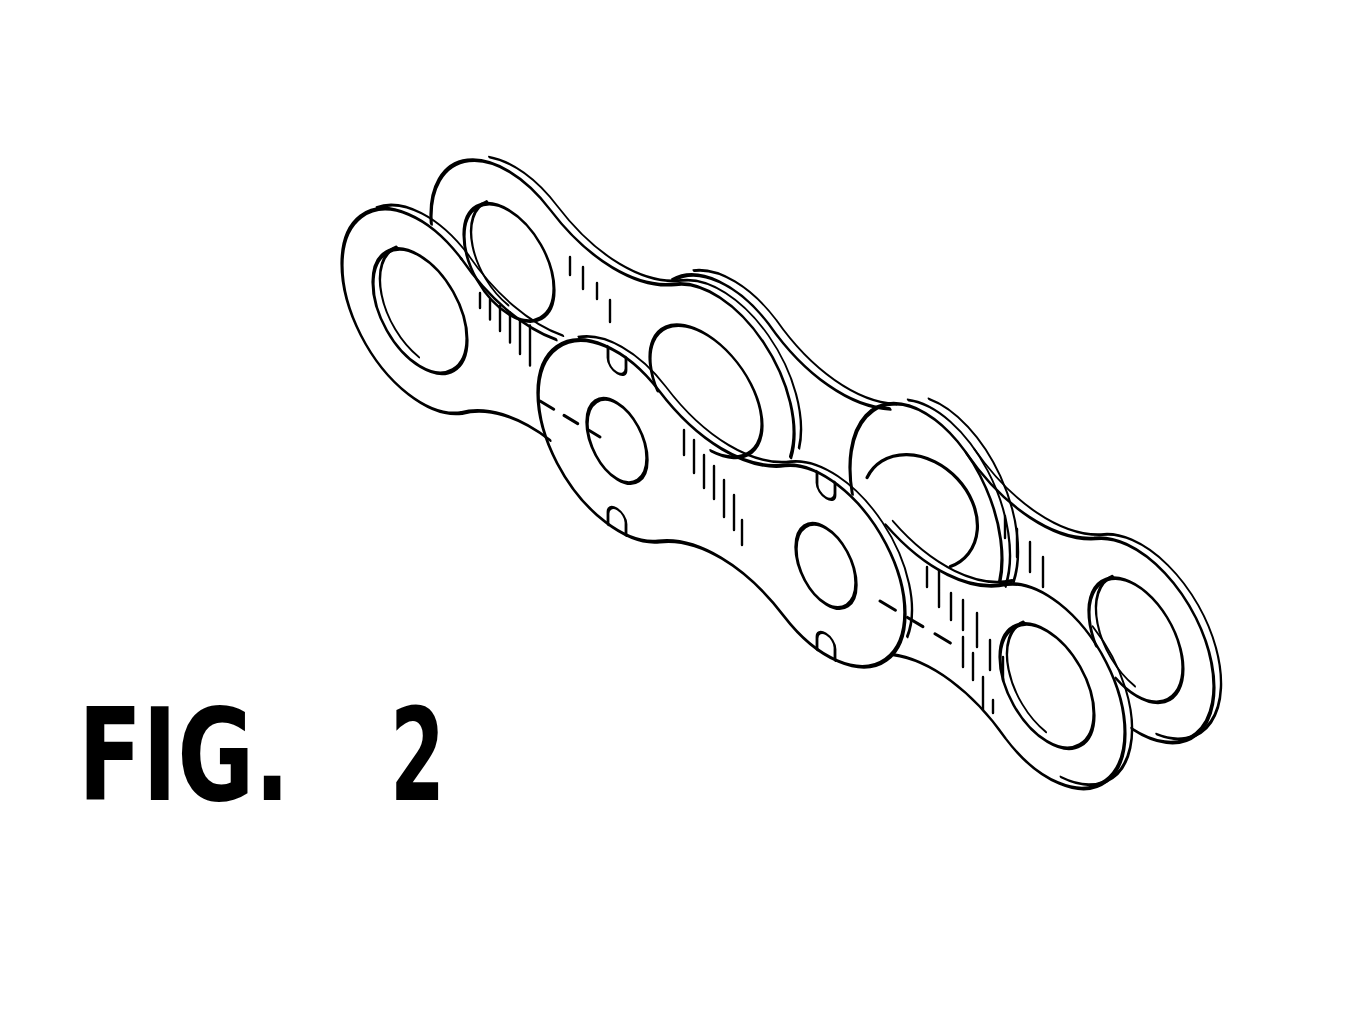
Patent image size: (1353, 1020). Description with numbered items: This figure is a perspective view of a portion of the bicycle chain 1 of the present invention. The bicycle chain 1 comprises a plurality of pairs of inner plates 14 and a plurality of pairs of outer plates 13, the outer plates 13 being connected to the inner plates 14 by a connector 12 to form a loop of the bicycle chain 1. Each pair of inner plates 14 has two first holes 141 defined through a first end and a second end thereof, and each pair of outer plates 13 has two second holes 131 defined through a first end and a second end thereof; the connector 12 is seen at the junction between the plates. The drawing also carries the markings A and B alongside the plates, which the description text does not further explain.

The bicycle chain 1 is at (1150, 126).
The connector 12 is at (908, 483).
The outer plate 13 is at (800, 615).
The second hole 131 is at (615, 450).
The inner plate 14 is at (1150, 562).
The first hole 141 is at (1157, 640).
The axis A is at (505, 386).
The axis B is at (958, 656).